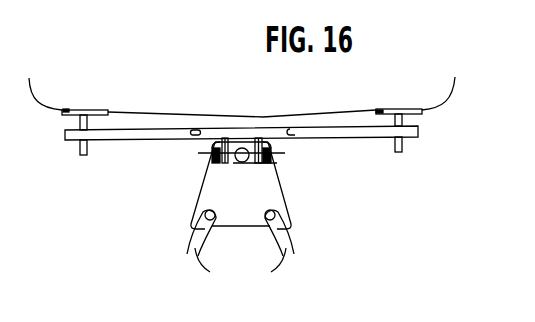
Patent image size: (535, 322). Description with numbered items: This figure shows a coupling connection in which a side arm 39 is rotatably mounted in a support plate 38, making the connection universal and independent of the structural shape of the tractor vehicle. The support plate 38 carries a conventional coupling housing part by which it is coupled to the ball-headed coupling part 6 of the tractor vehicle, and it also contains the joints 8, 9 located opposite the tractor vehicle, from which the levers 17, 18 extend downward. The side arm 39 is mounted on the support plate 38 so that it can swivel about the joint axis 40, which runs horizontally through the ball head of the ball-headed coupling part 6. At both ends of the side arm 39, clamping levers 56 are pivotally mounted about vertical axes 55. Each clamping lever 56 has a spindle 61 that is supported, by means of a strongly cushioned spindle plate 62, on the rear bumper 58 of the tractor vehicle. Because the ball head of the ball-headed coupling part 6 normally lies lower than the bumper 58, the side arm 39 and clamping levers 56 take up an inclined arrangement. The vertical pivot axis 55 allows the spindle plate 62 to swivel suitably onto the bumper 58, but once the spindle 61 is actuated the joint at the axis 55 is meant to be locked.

The rear bumper 58 is at (454, 77).
The spindle plate 62 is at (383, 110).
The spindle 61 is at (402, 120).
The vertical axis 55 is at (287, 133).
The clamping lever 56 is at (390, 136).
The side arm 39 is at (260, 132).
The joint axis 40 is at (203, 160).
The ball-headed coupling part 6 is at (241, 162).
The support plate 38 is at (273, 185).
The joint 9 is at (212, 223).
The joint 8 is at (270, 223).
The lever 18 is at (201, 256).
The lever 17 is at (279, 256).